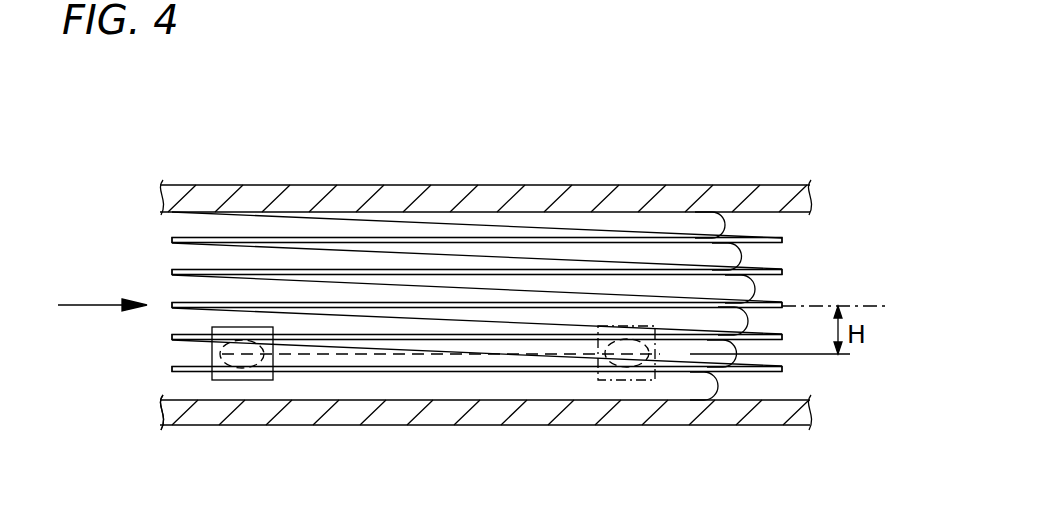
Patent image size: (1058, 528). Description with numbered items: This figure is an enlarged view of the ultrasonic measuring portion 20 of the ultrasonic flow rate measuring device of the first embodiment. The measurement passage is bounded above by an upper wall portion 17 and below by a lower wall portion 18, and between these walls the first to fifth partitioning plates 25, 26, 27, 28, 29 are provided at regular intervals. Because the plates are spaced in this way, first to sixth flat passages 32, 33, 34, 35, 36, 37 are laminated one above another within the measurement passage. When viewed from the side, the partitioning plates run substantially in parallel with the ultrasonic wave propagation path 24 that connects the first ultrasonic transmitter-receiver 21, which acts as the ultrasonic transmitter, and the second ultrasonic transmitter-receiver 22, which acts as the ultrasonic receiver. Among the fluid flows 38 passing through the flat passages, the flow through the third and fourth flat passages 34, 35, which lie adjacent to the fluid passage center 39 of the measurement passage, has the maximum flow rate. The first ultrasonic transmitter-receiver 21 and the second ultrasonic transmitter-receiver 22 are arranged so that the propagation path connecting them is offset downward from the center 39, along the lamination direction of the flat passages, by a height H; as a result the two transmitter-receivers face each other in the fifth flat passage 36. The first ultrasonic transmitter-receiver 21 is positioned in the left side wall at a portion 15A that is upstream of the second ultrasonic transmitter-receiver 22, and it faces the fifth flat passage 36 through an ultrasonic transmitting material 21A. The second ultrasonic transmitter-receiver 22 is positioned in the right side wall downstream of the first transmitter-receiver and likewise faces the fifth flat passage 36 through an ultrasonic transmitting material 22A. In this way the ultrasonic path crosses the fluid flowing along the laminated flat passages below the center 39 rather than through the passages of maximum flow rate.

The upstream portion of left side wall 15A is at (165, 404).
The upper wall portion 17 is at (600, 202).
The lower wall portion 18 is at (298, 405).
The ultrasonic measuring portion 20 is at (636, 146).
The first ultrasonic transmitter-receiver 21 is at (240, 380).
The ultrasonic transmitting material 21A is at (262, 384).
The second ultrasonic transmitter-receiver 22 is at (632, 362).
The ultrasonic transmitting material 22A is at (597, 403).
The ultrasonic wave propagation path 24 is at (345, 356).
The first partitioning plate 25 is at (222, 237).
The second partitioning plate 26 is at (340, 269).
The third partitioning plate 27 is at (470, 303).
The fourth partitioning plate 28 is at (403, 341).
The fifth partitioning plate 29 is at (492, 369).
The first flat passage 32 is at (290, 214).
The second flat passage 33 is at (398, 262).
The third flat passage 34 is at (530, 292).
The fourth flat passage 35 is at (452, 322).
The fifth flat passage 36 is at (538, 358).
The sixth flat passage 37 is at (682, 386).
The fluid flows 38 is at (757, 302).
The fluid passage center 39 is at (871, 302).